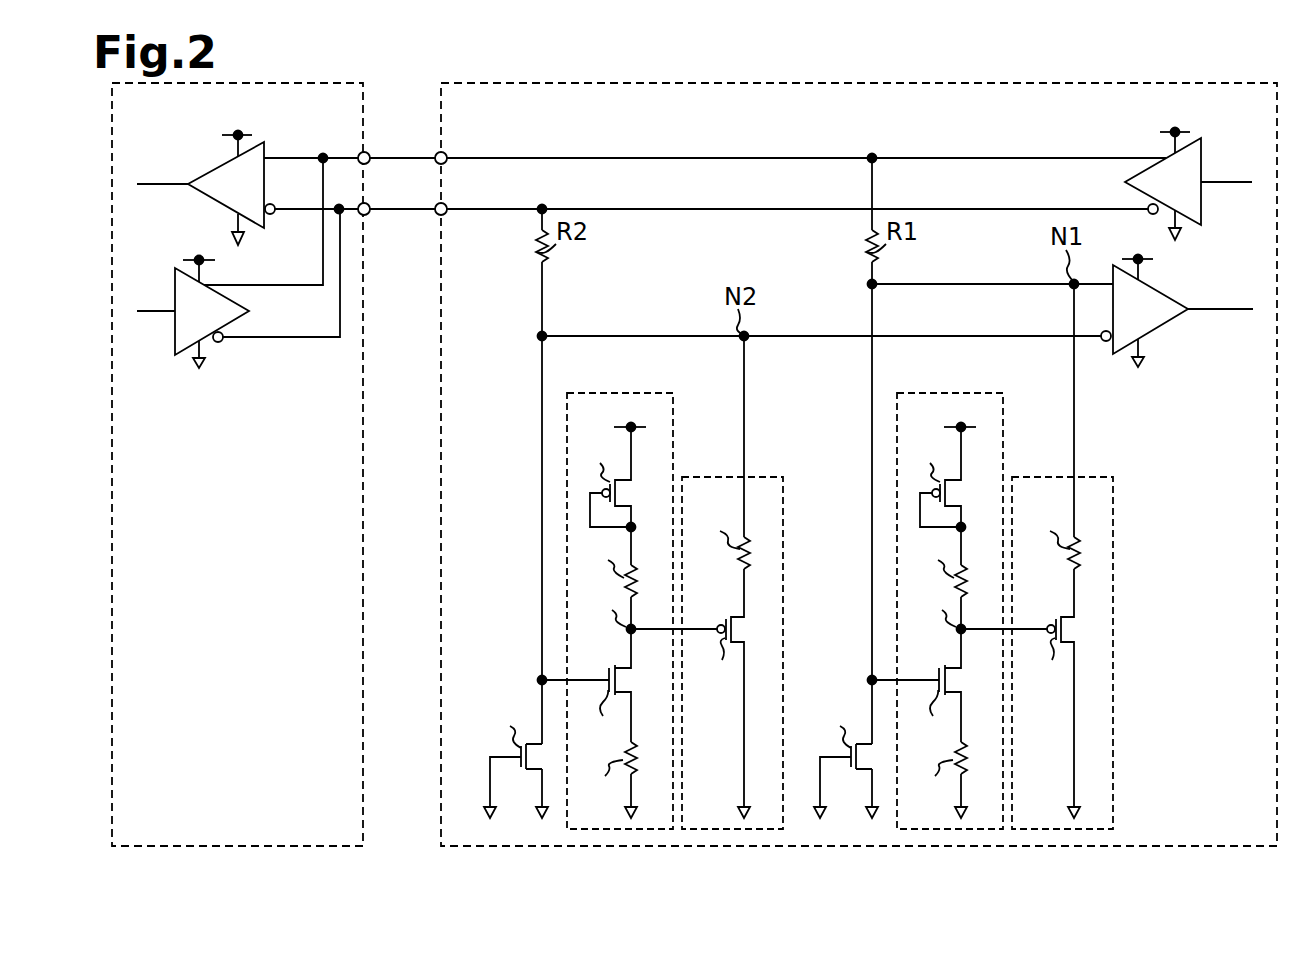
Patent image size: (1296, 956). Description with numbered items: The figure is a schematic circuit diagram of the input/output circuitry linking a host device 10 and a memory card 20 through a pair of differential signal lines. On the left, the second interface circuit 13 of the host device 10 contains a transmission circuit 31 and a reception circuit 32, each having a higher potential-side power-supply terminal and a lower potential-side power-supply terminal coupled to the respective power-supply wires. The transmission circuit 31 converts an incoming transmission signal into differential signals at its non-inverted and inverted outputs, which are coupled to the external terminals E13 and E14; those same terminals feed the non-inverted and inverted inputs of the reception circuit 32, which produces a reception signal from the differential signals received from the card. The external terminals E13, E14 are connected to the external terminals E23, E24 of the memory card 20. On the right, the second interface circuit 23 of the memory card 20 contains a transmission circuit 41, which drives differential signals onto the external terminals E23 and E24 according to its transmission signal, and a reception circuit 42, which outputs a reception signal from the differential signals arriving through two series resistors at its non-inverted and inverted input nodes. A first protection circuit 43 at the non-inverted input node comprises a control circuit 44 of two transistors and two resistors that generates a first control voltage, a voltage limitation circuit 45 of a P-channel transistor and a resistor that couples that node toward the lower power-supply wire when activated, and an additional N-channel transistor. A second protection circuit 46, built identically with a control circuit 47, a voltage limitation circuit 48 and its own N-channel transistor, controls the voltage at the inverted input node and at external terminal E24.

The host device 10 is at (343, 83).
The memory card 20 is at (461, 83).
The second interface circuit 13 is at (177, 130).
The second interface circuit 23 is at (489, 132).
The transmission circuit 31 is at (175, 346).
The reception circuit 32 is at (263, 148).
The transmission circuit 41 is at (1201, 161).
The reception circuit 42 is at (1164, 324).
The first protection circuit 43 is at (974, 612).
The control circuit 44 is at (1005, 412).
The voltage limitation circuit 45 is at (1049, 477).
The second protection circuit 46 is at (644, 612).
The control circuit 47 is at (675, 412).
The voltage limitation circuit 48 is at (719, 477).
The external terminal E13 is at (366, 150).
The external terminal E14 is at (369, 215).
The external terminal E23 is at (438, 163).
The external terminal E24 is at (441, 216).